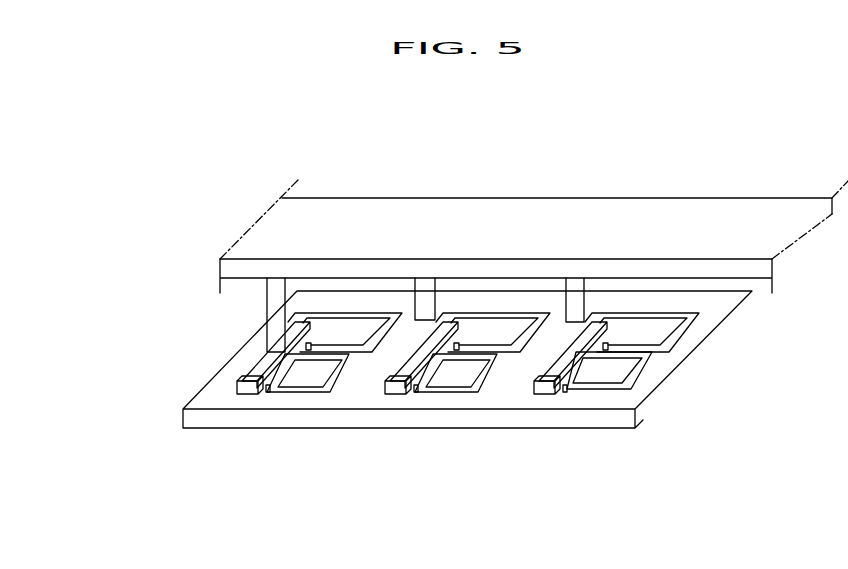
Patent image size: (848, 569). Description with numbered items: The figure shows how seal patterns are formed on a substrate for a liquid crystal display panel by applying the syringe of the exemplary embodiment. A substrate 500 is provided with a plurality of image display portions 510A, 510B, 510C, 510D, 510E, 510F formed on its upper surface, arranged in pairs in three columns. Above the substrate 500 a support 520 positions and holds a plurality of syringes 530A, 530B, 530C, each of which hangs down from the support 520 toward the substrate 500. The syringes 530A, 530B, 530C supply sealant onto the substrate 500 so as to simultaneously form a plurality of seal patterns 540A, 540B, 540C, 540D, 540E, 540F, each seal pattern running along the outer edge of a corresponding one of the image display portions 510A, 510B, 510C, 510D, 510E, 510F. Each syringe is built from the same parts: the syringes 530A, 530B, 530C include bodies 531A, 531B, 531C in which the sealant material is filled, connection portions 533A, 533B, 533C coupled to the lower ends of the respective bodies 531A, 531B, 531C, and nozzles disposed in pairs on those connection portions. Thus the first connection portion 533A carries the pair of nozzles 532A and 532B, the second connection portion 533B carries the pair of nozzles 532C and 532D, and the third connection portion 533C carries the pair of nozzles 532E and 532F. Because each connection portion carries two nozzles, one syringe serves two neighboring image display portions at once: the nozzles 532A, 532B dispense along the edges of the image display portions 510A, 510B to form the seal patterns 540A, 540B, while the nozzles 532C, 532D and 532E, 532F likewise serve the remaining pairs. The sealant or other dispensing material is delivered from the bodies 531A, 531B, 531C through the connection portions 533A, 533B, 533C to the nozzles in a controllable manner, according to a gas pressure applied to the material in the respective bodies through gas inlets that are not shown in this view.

The substrate 500 is at (195, 422).
The support 520 is at (352, 208).
The syringe 530A is at (151, 293).
The syringe 530B is at (470, 502).
The syringe 530C is at (498, 495).
The body 531A is at (268, 300).
The body 531B is at (417, 320).
The body 531C is at (567, 325).
The nozzle 532A is at (307, 344).
The nozzle 532B is at (262, 385).
The nozzle 532C is at (386, 388).
The nozzle 532D is at (420, 393).
The nozzle 532E is at (541, 392).
The nozzle 532F is at (567, 392).
The connection portion 533A is at (258, 356).
The connection portion 533B is at (397, 395).
The connection portion 533C is at (549, 395).
The seal pattern 540A is at (372, 352).
The seal pattern 540B is at (300, 378).
The seal pattern 540C is at (497, 313).
The seal pattern 540D is at (500, 353).
The seal pattern 540E is at (690, 327).
The seal pattern 540F is at (645, 370).
The image display portion 510A is at (346, 331).
The image display portion 510B is at (310, 373).
The image display portion 510C is at (494, 331).
The image display portion 510D is at (458, 373).
The image display portion 510E is at (643, 331).
The image display portion 510F is at (607, 370).